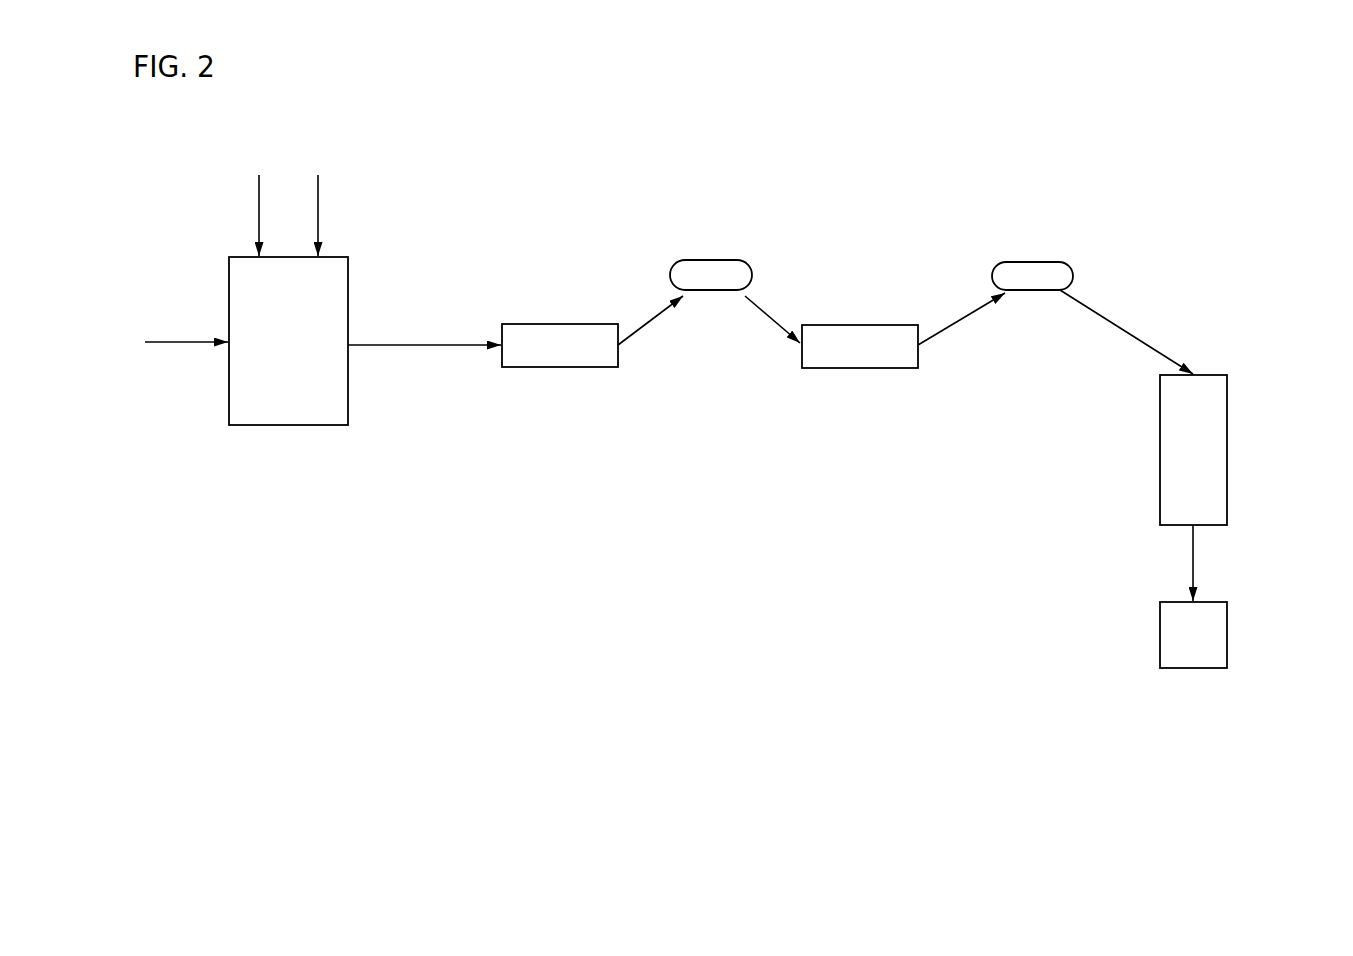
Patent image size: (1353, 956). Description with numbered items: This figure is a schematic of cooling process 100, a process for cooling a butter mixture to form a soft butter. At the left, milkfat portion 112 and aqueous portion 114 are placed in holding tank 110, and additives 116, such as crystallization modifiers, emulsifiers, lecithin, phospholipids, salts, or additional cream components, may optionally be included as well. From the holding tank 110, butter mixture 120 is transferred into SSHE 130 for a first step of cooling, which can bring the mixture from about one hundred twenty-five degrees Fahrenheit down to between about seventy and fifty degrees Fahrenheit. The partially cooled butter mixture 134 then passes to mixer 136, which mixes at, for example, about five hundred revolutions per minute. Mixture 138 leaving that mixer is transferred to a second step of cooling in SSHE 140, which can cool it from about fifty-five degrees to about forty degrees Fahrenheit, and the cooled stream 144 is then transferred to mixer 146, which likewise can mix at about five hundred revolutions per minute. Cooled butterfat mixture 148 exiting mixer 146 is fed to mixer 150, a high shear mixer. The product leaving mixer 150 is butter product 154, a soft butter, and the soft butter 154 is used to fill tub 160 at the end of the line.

The cooling process 100 is at (730, 165).
The holding tank 110 is at (290, 425).
The milkfat portion 112 is at (165, 340).
The aqueous portion 114 is at (260, 203).
The additives 116 is at (318, 203).
The butter mixture 120 is at (425, 345).
The SSHE 130 is at (558, 324).
The partially cooled butter mixture 134 is at (652, 320).
The mixer 136 is at (713, 260).
The mixture 138 is at (775, 318).
The SSHE 140 is at (862, 325).
The transfer stream 144 is at (962, 320).
The mixer 146 is at (1032, 262).
The cooled butterfat mixture 148 is at (1107, 318).
The mixer 150 is at (1227, 450).
The butter product 154 is at (1195, 562).
The tub 160 is at (1227, 635).